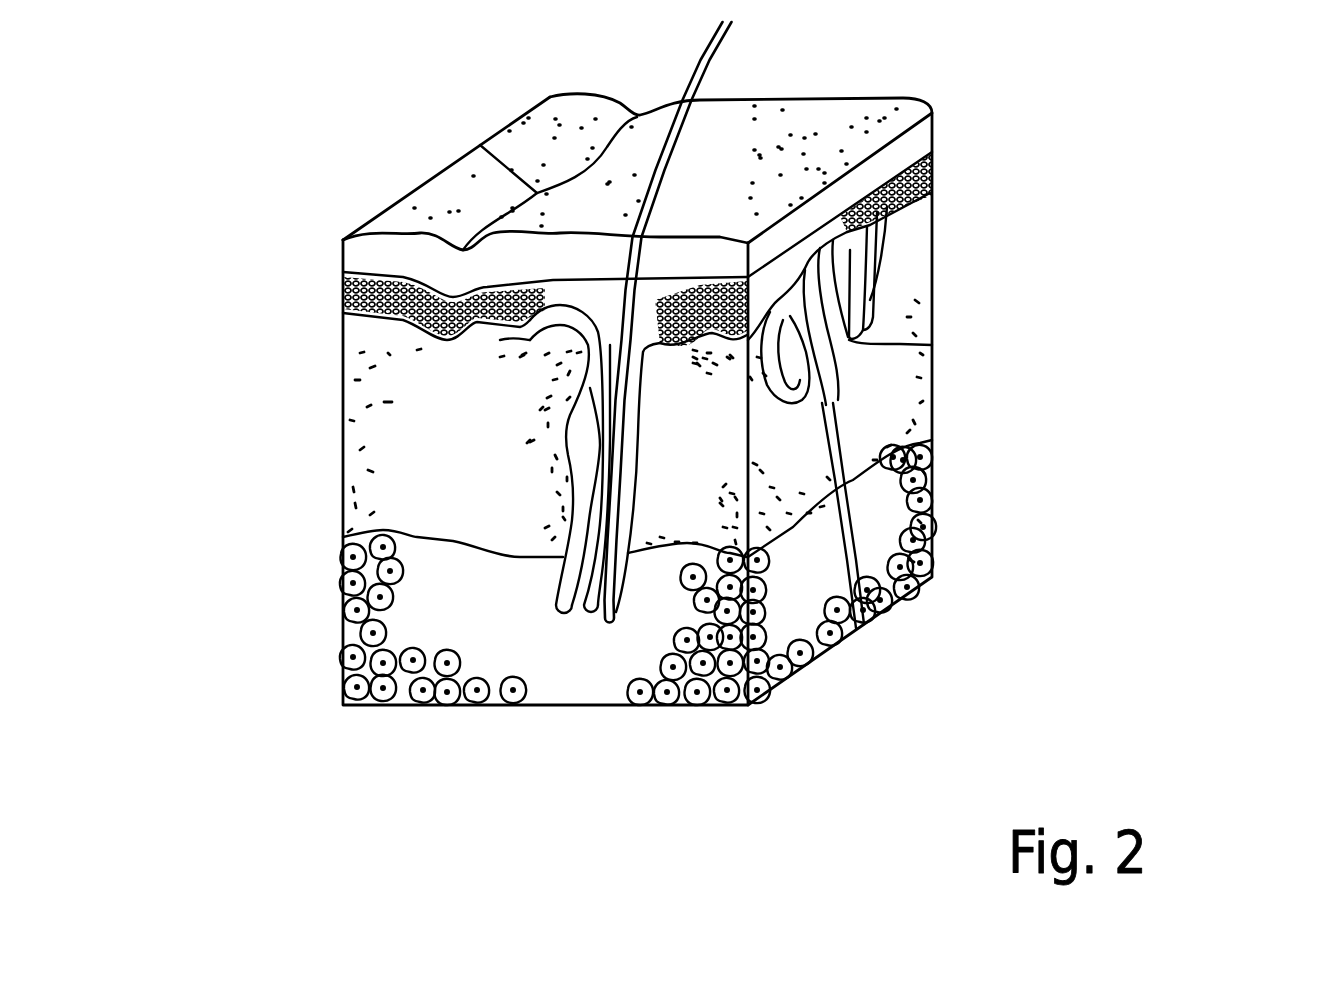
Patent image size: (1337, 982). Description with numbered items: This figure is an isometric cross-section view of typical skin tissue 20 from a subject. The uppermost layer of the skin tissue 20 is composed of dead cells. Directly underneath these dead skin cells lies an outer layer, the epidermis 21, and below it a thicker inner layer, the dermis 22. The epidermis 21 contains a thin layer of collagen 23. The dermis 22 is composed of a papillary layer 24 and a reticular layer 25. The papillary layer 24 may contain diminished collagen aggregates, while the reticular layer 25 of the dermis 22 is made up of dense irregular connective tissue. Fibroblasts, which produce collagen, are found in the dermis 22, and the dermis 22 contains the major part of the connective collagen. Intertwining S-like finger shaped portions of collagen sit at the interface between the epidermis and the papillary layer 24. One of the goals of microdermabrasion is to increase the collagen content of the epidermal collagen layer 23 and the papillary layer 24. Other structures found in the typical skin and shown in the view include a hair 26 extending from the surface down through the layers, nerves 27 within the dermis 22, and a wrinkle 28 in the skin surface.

The skin tissue 20 is at (759, 356).
The epidermis 21 is at (314, 227).
The dermis 22 is at (306, 340).
The collagen 23 is at (934, 175).
The papillary layer 24 is at (934, 287).
The reticular layer 25 is at (934, 517).
The hair 26 is at (733, 50).
The nerves 27 is at (934, 348).
The wrinkle 28 is at (483, 148).